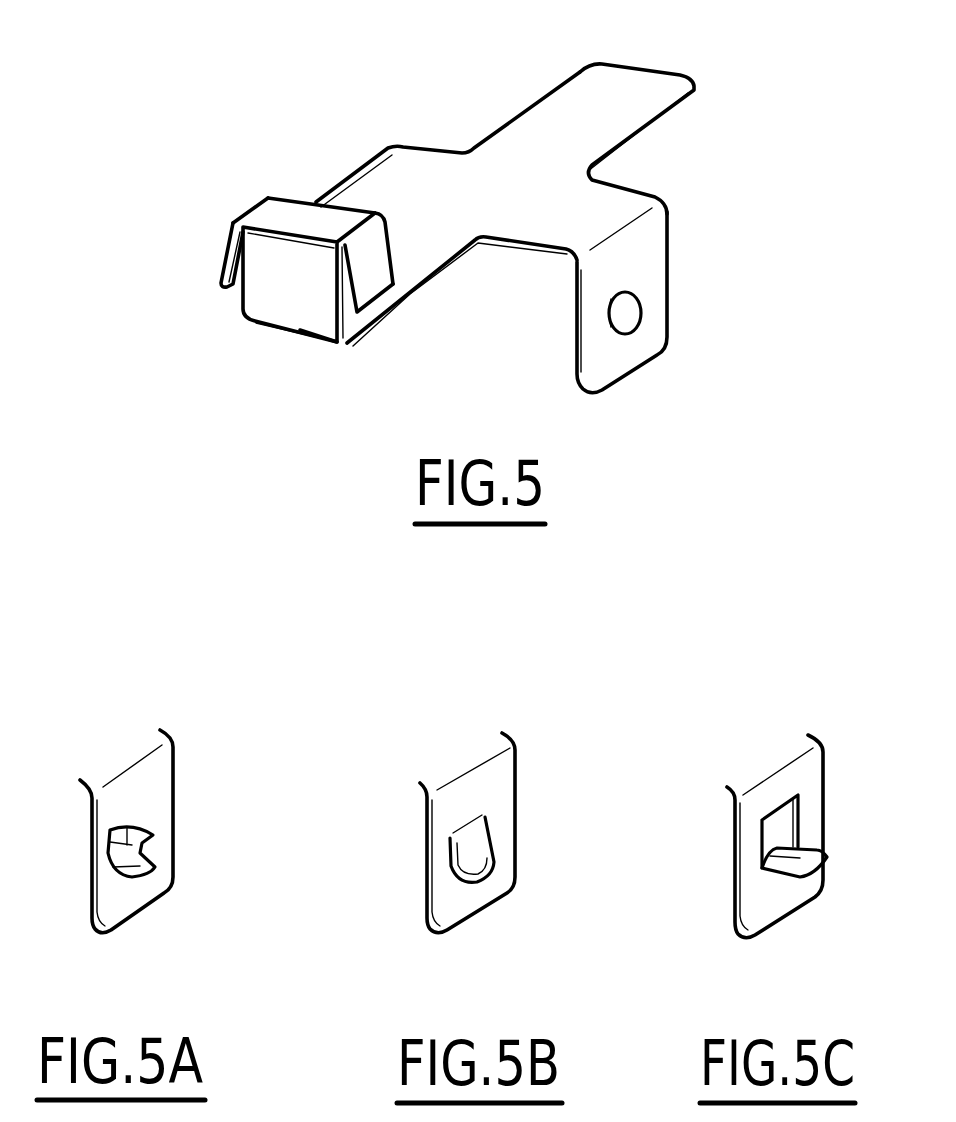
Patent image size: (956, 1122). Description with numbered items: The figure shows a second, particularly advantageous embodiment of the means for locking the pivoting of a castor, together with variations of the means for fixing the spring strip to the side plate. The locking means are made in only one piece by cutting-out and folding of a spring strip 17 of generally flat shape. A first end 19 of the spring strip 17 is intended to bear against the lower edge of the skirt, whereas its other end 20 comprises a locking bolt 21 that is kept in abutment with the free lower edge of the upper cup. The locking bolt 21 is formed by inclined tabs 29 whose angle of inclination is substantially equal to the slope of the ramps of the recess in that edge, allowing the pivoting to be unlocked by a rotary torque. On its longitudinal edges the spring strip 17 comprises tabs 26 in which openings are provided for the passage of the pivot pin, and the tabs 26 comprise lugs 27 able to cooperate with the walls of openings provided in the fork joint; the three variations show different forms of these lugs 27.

In FIG. 5, the spring strip 17 is at (522, 137).
In FIG. 5, the first end 19 is at (663, 82).
In FIG. 5, the other end 20 is at (347, 320).
In FIG. 5, the locking bolt 21 is at (290, 189).
In FIG. 5, the tabs 26 is at (640, 277).
In FIG. 5, the lugs 27 is at (630, 327).
In FIG. 5A, the lugs 27 is at (147, 867).
In FIG. 5B, the lugs 27 is at (480, 857).
In FIG. 5C, the lugs 27 is at (800, 850).
In FIG. 5, the inclined tabs 29 is at (220, 268).